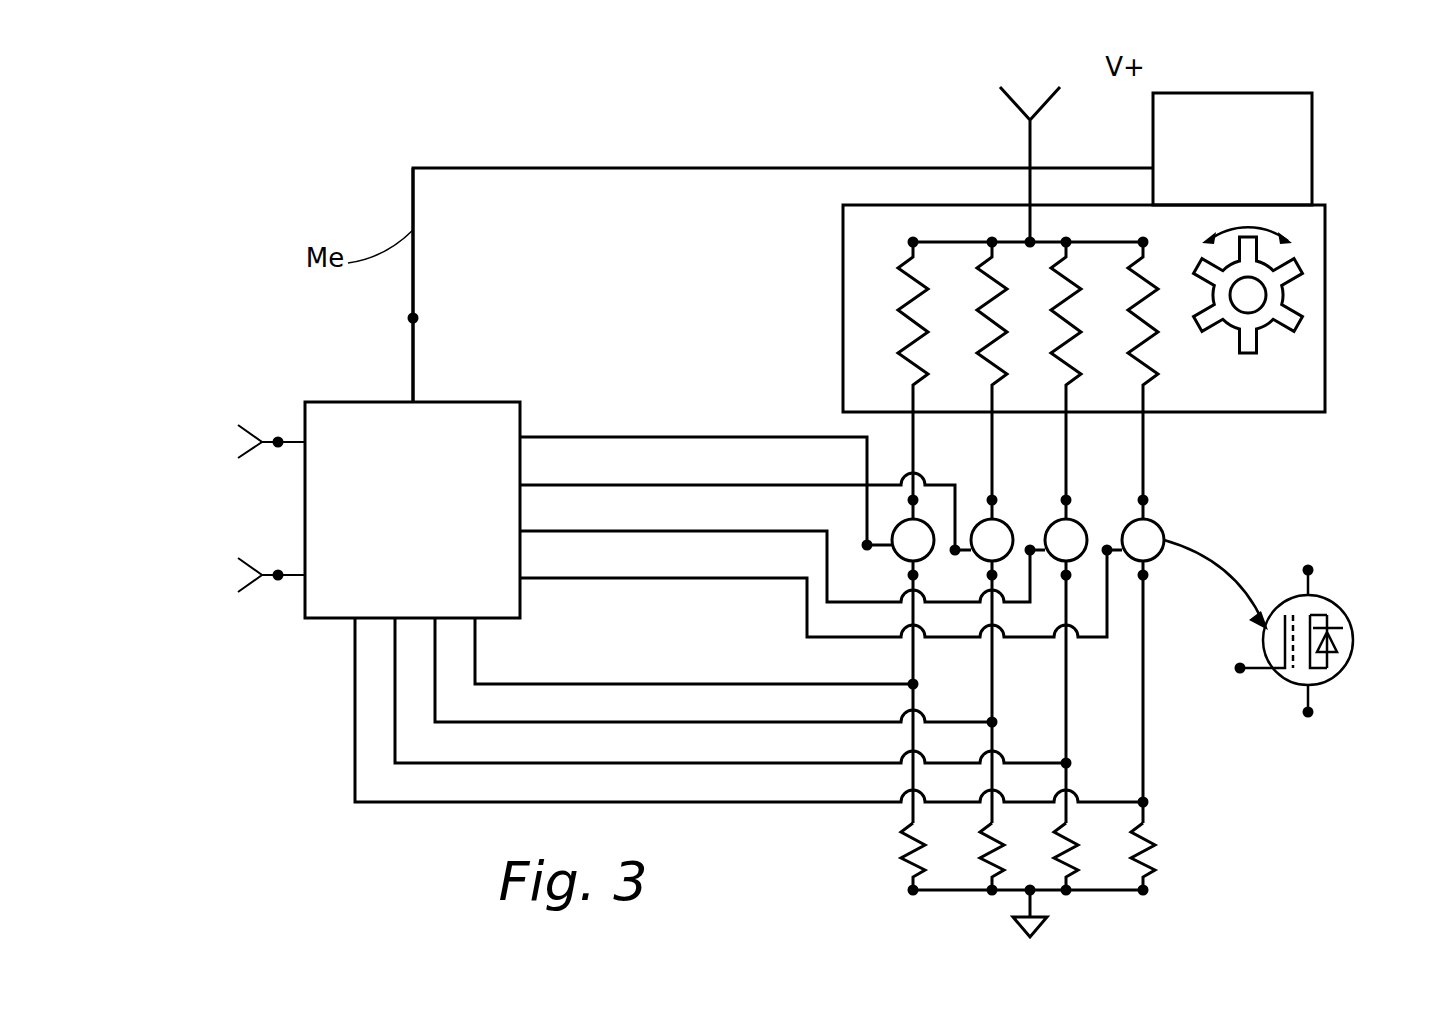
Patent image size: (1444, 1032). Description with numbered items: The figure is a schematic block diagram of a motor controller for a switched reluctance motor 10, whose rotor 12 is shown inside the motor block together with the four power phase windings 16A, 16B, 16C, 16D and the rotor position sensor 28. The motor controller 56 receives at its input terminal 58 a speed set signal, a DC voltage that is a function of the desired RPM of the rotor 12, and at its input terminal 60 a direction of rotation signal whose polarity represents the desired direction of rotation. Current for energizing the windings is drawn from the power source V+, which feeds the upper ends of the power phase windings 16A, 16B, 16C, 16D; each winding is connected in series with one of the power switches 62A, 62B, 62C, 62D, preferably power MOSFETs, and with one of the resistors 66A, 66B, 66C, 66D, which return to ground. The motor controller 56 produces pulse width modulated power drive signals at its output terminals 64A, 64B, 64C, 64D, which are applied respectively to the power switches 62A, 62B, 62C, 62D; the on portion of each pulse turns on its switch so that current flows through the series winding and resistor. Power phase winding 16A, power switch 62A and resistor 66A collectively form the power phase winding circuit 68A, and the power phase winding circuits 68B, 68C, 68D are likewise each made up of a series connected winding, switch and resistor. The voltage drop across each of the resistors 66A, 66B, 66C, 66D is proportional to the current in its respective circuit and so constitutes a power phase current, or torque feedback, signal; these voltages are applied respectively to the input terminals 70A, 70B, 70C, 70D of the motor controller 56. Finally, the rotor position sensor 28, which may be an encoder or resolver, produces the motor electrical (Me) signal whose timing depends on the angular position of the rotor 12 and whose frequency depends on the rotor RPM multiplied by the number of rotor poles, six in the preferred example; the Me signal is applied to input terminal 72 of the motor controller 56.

The motor 10 is at (1325, 323).
The rotor 12 is at (1295, 265).
The rotor position sensor 28 is at (1312, 158).
The motor controller 56 is at (377, 402).
The input terminal 58 is at (278, 440).
The input terminal 60 is at (278, 578).
The input terminal 72 is at (413, 318).
The power phase winding 16A is at (910, 324).
The power phase winding 16B is at (990, 324).
The power phase winding 16C is at (1067, 324).
The power phase winding 16D is at (1145, 324).
The power switch 62A is at (902, 552).
The power switch 62B is at (980, 552).
The power switch 62C is at (1073, 517).
The power switch 62D is at (1155, 520).
The output terminal 64A is at (637, 437).
The output terminal 64B is at (627, 485).
The output terminal 64C is at (627, 531).
The output terminal 64D is at (620, 578).
The resistor 66A is at (910, 833).
The resistor 66B is at (997, 833).
The resistor 66C is at (1070, 833).
The resistor 66D is at (1147, 833).
The power phase winding circuit 68A is at (912, 657).
The power phase winding circuit 68B is at (991, 685).
The power phase winding circuit 68C is at (1065, 729).
The power phase winding circuit 68D is at (1142, 762).
The input terminal 70A is at (497, 802).
The input terminal 70B is at (530, 763).
The input terminal 70C is at (577, 722).
The input terminal 70D is at (593, 684).